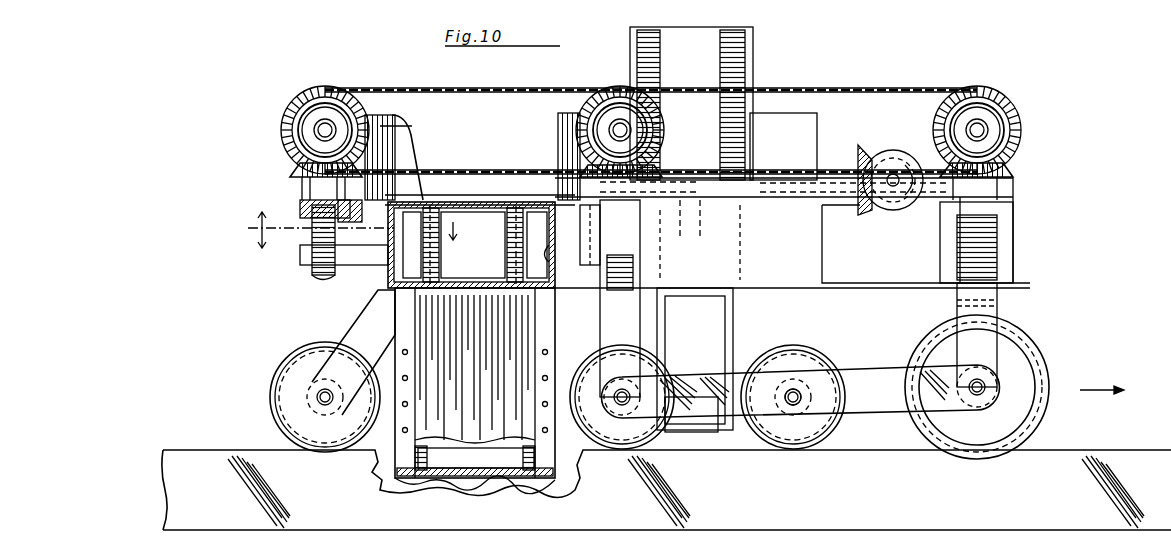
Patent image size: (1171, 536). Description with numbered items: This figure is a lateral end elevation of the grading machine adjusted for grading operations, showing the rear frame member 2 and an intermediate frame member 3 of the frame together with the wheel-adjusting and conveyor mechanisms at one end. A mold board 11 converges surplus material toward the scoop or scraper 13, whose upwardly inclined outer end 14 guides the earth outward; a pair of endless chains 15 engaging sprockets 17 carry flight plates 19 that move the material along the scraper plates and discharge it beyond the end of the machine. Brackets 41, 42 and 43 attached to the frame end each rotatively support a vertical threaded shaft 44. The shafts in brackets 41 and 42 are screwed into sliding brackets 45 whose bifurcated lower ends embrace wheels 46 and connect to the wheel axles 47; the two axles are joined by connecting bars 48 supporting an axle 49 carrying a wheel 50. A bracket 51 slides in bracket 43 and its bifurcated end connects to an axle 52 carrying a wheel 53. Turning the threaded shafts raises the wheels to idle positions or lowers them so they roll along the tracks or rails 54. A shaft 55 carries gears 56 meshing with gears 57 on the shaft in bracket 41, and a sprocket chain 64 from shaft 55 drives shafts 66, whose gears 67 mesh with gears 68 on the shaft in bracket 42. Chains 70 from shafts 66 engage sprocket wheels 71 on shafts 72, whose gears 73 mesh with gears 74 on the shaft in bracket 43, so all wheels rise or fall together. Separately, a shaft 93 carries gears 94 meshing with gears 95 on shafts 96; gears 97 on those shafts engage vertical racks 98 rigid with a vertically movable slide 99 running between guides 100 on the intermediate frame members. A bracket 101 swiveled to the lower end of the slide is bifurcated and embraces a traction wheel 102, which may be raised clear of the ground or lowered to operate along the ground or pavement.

The rear frame member 2 is at (390, 262).
The intermediate frame member 3 is at (822, 264).
The mold board 11 is at (455, 224).
The scoop or scraper 13 is at (478, 478).
The upwardly inclined outer end 14 is at (558, 464).
The endless chain 15 is at (473, 245).
The sprocket 17 is at (555, 257).
The flight plate 19 is at (470, 212).
The bracket 41 is at (1010, 240).
The bracket 42 is at (590, 217).
The bracket 43 is at (352, 206).
The vertical threaded shaft 44 is at (313, 233).
The bracket 45 is at (606, 328).
The wheel 46 is at (628, 442).
The wheel axle 47 is at (977, 393).
The connecting bar 48 is at (878, 372).
The axle 49 is at (793, 402).
The wheel 50 is at (806, 346).
The bracket 51 is at (308, 252).
The axle 52 is at (325, 402).
The wheel 53 is at (290, 412).
The track or rail 54 is at (220, 452).
The shaft 55 is at (983, 128).
The gear 56 is at (1016, 120).
The gear 57 is at (1013, 175).
The sprocket chain 64 is at (860, 88).
The shaft 66 is at (618, 125).
The gear 67 is at (604, 118).
The gear 68 is at (662, 171).
The chain 70 is at (398, 88).
The sprocket wheel 71 is at (339, 226).
The shaft 72 is at (318, 128).
The gear 73 is at (312, 96).
The gear 74 is at (302, 172).
The shaft 93 is at (893, 187).
The gear 94 is at (896, 154).
The gear 95 is at (864, 150).
The shaft 96 is at (776, 180).
The gear 97 is at (680, 192).
The vertical rack 98 is at (722, 57).
The vertically movable slide 99 is at (700, 38).
The guide 100 is at (795, 140).
The bracket 101 is at (733, 314).
The traction wheel 102 is at (703, 434).